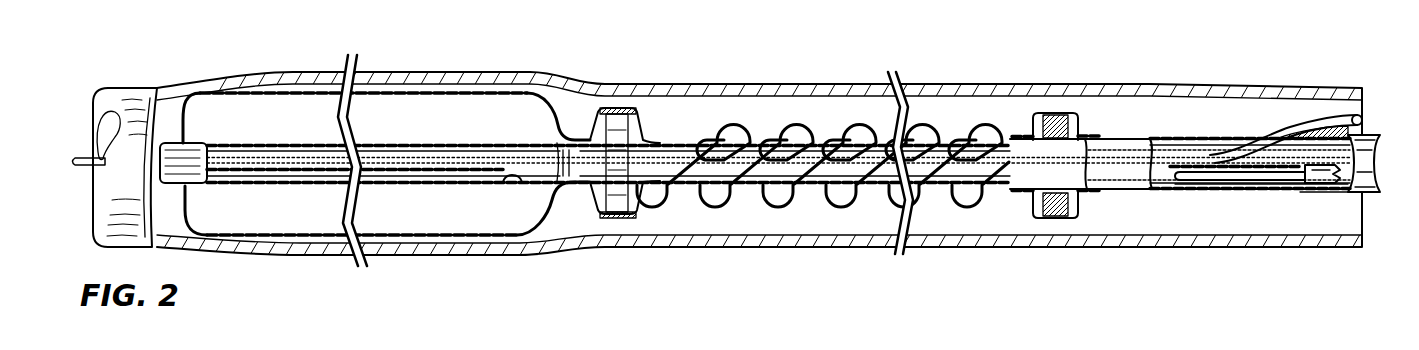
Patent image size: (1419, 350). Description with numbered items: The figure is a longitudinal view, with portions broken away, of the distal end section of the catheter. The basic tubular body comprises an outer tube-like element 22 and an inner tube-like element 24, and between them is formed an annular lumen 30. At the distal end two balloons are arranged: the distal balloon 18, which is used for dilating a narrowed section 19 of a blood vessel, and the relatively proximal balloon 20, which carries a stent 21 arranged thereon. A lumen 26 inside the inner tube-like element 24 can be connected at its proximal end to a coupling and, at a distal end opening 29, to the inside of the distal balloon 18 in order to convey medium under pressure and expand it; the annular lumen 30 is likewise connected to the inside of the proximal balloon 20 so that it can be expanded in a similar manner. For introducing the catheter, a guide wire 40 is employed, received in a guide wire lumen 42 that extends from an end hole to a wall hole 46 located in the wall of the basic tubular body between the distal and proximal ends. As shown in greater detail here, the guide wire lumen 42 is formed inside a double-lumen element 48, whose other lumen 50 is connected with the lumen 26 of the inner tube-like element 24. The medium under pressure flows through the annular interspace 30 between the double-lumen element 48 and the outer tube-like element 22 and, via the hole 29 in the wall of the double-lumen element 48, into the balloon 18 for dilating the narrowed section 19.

The distal balloon 18 is at (547, 222).
The narrowed section 19 is at (772, 240).
The proximal balloon 20 is at (938, 183).
The stent 21 is at (852, 207).
The outer tube-like element 22 is at (1370, 190).
The inner tube-like element 24 is at (1327, 190).
The lumen 26 is at (413, 173).
The distal end opening 29 is at (520, 180).
The annular lumen 30 is at (1237, 180).
The guide wire 40 is at (85, 167).
The guide wire lumen 42 is at (405, 152).
The wall hole 46 is at (1250, 140).
The double-lumen element 48 is at (1163, 150).
The other lumen 50 is at (1200, 172).